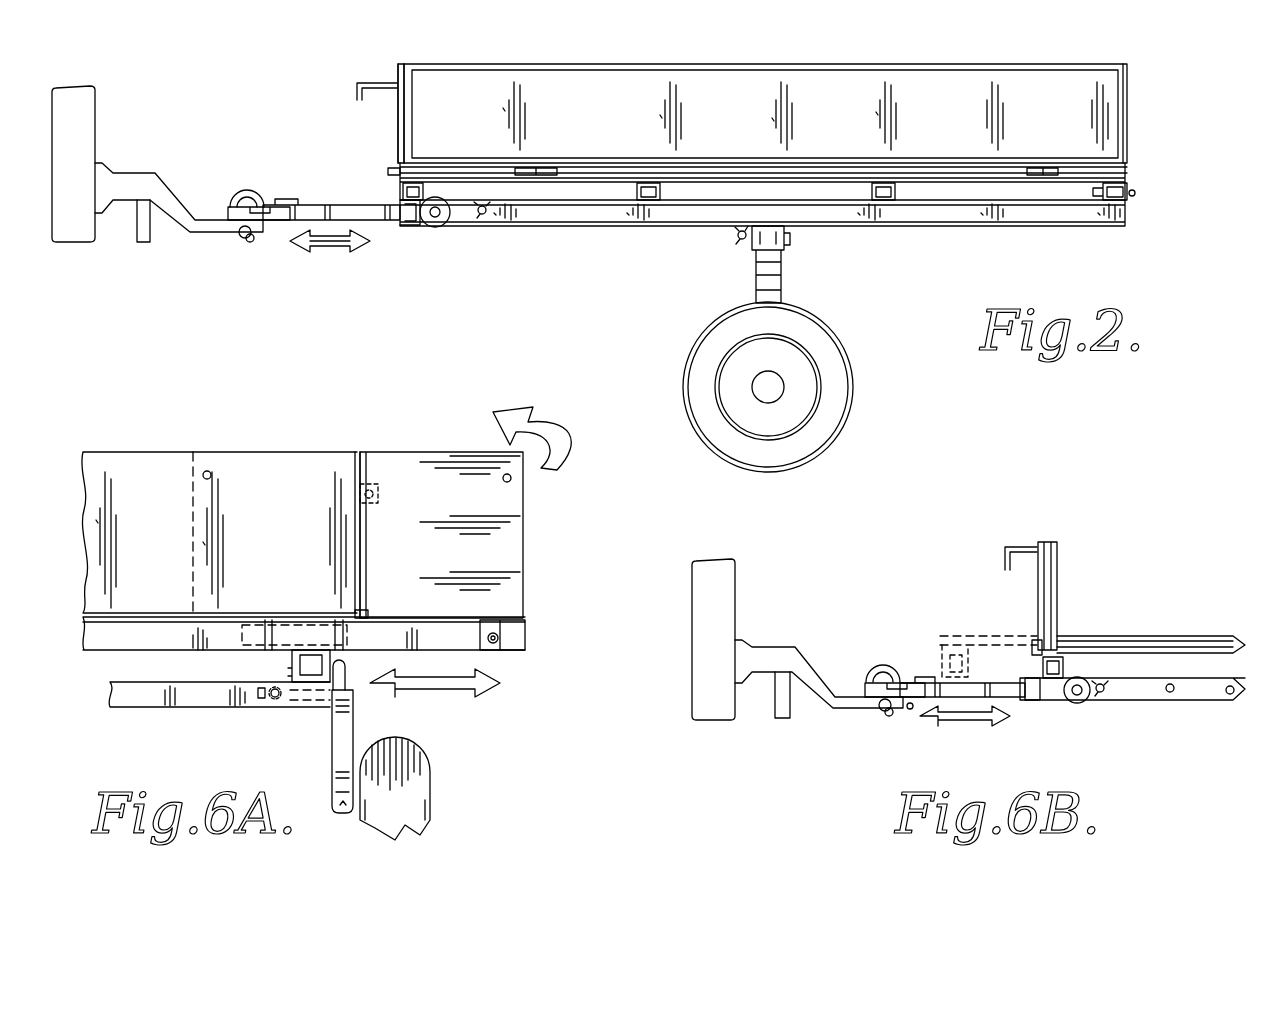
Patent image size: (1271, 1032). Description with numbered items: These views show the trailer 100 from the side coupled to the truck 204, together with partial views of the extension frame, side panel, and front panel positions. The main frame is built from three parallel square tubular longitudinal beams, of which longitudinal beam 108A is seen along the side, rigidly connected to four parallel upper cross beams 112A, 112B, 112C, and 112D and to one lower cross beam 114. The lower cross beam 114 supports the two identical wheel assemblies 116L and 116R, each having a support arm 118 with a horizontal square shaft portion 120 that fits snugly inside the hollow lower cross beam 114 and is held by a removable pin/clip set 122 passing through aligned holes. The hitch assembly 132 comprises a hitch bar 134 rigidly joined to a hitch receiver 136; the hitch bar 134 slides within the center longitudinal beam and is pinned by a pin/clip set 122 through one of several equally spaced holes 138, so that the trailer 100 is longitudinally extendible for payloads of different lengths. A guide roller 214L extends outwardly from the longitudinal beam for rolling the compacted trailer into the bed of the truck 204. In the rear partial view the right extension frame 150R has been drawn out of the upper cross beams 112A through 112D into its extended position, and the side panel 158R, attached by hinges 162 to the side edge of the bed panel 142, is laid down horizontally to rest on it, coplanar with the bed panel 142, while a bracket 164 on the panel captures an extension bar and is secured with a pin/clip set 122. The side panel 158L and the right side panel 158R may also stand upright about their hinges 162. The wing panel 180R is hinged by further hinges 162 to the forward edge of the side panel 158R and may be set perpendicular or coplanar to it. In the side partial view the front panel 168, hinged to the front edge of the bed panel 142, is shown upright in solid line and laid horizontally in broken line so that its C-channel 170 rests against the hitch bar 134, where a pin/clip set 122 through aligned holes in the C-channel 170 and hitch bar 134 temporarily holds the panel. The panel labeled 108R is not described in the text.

In FIG. 2, the trailer 100 is at (681, 61).
In FIG. 6A, the trailer 100 is at (581, 446).
In FIG. 2, the longitudinal beam 108A is at (953, 210).
In FIG. 6A, the right side panel 108R is at (193, 498).
In FIG. 2, the upper cross beam 112A is at (427, 182).
In FIG. 2, the upper cross beam 112B is at (633, 190).
In FIG. 2, the upper cross beam 112C is at (883, 222).
In FIG. 2, the upper cross beam 112D is at (1130, 200).
In FIG. 6A, the lower cross beam 114 is at (203, 710).
In FIG. 2, the wheel assembly 116L is at (840, 342).
In FIG. 6A, the wheel assembly 116R is at (430, 760).
In FIG. 6A, the support arm 118 is at (353, 730).
In FIG. 6A, the shaft portion 120 is at (254, 712).
In FIG. 2, the pin/clip set 122 is at (1132, 193).
In FIG. 6A, the pin/clip set 122 is at (207, 467).
In FIG. 6B, the pin/clip set 122 is at (910, 710).
In FIG. 2, the hitch assembly 132 is at (320, 206).
In FIG. 6B, the hitch assembly 132 is at (890, 670).
In FIG. 2, the hitch bar 134 is at (365, 205).
In FIG. 6B, the hitch bar 134 is at (1015, 698).
In FIG. 2, the hitch receiver 136 is at (232, 197).
In FIG. 6B, the hitch receiver 136 is at (872, 680).
In FIG. 6B, the holes 138 is at (1100, 677).
In FIG. 6A, the bed panel 142 is at (312, 570).
In FIG. 6B, the bed panel 142 is at (1223, 640).
In FIG. 6A, the extension frame 150R is at (522, 646).
In FIG. 2, the side panel 158L is at (832, 100).
In FIG. 6A, the side panel 158R is at (490, 613).
In FIG. 2, the hinges 162 is at (538, 168).
In FIG. 6A, the hinges 162 is at (370, 613).
In FIG. 6B, the hinges 162 is at (1027, 698).
In FIG. 6A, the bracket 164 is at (377, 480).
In FIG. 2, the front panel 168 is at (397, 68).
In FIG. 6A, the front panel 168 is at (172, 543).
In FIG. 6B, the front panel 168 is at (1043, 542).
In FIG. 2, the C-channel 170 is at (357, 82).
In FIG. 6B, the C-channel 170 is at (1020, 547).
In FIG. 6A, the wing panel 180R is at (522, 513).
In FIG. 6B, the wing panel 180R is at (1057, 550).
In FIG. 2, the truck 204 is at (93, 110).
In FIG. 6B, the truck 204 is at (733, 573).
In FIG. 2, the guide roller 214L is at (443, 232).